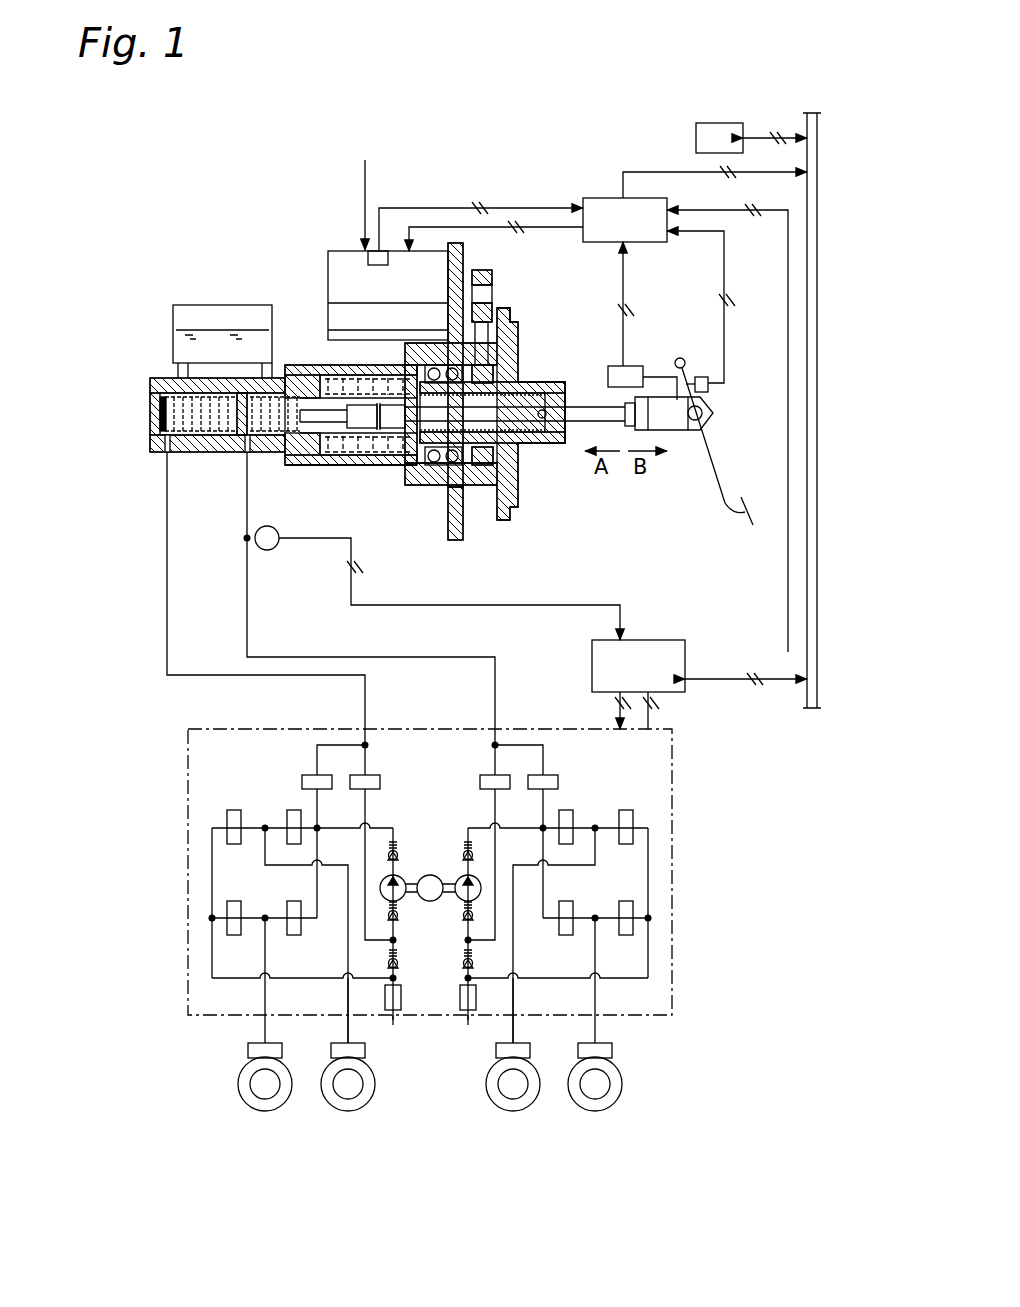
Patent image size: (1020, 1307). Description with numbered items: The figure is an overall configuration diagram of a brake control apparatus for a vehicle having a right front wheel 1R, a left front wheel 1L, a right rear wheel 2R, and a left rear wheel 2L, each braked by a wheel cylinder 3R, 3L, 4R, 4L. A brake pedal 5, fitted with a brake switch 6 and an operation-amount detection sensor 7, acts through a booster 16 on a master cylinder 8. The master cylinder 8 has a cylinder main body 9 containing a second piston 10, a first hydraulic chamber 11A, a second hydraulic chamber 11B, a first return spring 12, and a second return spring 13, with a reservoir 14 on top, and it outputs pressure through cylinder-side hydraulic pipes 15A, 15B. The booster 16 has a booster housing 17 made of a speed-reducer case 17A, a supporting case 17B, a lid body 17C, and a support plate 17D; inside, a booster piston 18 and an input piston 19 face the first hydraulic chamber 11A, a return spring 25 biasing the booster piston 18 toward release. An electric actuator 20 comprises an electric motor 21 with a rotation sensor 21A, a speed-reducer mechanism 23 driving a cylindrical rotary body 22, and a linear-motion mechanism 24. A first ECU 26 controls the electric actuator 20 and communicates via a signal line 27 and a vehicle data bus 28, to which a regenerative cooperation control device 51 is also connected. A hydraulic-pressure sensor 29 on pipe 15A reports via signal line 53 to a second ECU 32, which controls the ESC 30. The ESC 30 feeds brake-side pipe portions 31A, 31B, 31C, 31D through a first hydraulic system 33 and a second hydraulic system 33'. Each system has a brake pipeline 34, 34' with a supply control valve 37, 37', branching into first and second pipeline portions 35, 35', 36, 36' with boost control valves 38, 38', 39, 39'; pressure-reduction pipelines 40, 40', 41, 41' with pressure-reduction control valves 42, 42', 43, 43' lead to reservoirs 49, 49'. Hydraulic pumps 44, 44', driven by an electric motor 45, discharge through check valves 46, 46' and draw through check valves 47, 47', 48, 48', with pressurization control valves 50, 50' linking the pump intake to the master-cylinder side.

The left front wheel 1L is at (530, 1098).
The right front wheel 1R is at (365, 1100).
The left rear wheel 2L is at (238, 1083).
The right rear wheel 2R is at (620, 1100).
The front-wheel side wheel cylinder 3L is at (530, 1047).
The front-wheel side wheel cylinder 3R is at (335, 1044).
The rear-wheel side wheel cylinder 4L is at (248, 1048).
The rear-wheel side wheel cylinder 4R is at (613, 1048).
The brake pedal 5 is at (742, 497).
The brake switch 6 is at (709, 386).
The operation-amount detection sensor 7 is at (634, 365).
The master cylinder 8 is at (293, 362).
The cylinder main body 9 is at (165, 380).
The second piston 10 is at (232, 452).
The first hydraulic chamber 11A is at (262, 452).
The second hydraulic chamber 11B is at (200, 452).
The first return spring 12 is at (300, 425).
The second return spring 13 is at (156, 452).
The reservoir 14 is at (200, 304).
The cylinder-side hydraulic pipe 15A is at (340, 657).
The cylinder-side hydraulic pipe 15B is at (200, 620).
The booster 16 is at (363, 193).
The booster housing 17 is at (516, 512).
The speed-reducer case 17A is at (440, 482).
The supporting case 17B is at (358, 467).
The lid body 17C is at (518, 335).
The support plate 17D is at (452, 528).
The booster piston 18 is at (335, 380).
The input piston 19 is at (392, 430).
The electric actuator 20 is at (497, 278).
The electric motor 21 is at (340, 258).
The rotation sensor 21A is at (383, 255).
The cylindrical rotary body 22 is at (498, 455).
The speed-reducer mechanism 23 is at (500, 348).
The linear-motion mechanism 24 is at (520, 448).
The return spring 25 is at (345, 430).
The first ECU 26 is at (598, 197).
The signal line 27 is at (788, 345).
The vehicle data bus 28 is at (807, 690).
The hydraulic-pressure sensor 29 is at (275, 548).
The ESC 30 is at (675, 950).
The brake-side pipe portion 31A is at (515, 1003).
The brake-side pipe portion 31B is at (346, 1003).
The brake-side pipe portion 31C is at (262, 1003).
The brake-side pipe portion 31D is at (598, 1000).
The second ECU 32 is at (592, 664).
The first hydraulic system 33 is at (497, 734).
The second hydraulic system 33' is at (365, 734).
The brake pipeline 34 is at (558, 795).
The brake pipeline 34' is at (302, 795).
The first pipeline portion 35 is at (576, 935).
The first pipeline portion 35' is at (283, 935).
The second pipeline portion 36 is at (595, 897).
The second pipeline portion 36' is at (264, 900).
The supply control valve 37 is at (566, 827).
The supply control valve 37' is at (307, 827).
The boost control valve 38 is at (585, 818).
The boost control valve 38' is at (277, 818).
The boost control valve 39 is at (559, 939).
The boost control valve 39' is at (301, 939).
The first pressure-reduction pipeline 40 is at (682, 903).
The first pressure-reduction pipeline 40' is at (181, 903).
The second pressure-reduction pipeline 41 is at (681, 904).
The second pressure-reduction pipeline 41' is at (183, 944).
The first pressure-reduction control valve 42 is at (639, 814).
The first pressure-reduction control valve 42' is at (220, 814).
The second pressure-reduction control valve 43 is at (625, 939).
The second pressure-reduction control valve 43' is at (231, 939).
The hydraulic pump 44 is at (492, 924).
The hydraulic pump 44' is at (368, 924).
The electric motor 45 is at (430, 875).
The check valve 46 is at (459, 829).
The check valve 46' is at (401, 829).
The check valve 47 is at (453, 937).
The check valve 47' is at (420, 935).
The check valve 48 is at (485, 977).
The check valve 48' is at (411, 995).
The reservoir for hydraulic-pressure control 49 is at (461, 1033).
The reservoir for hydraulic-pressure control 49' is at (396, 1033).
The pressurization control valve 50 is at (480, 842).
The pressurization control valve 50' is at (386, 842).
The regenerative cooperation control device 51 is at (696, 133).
The signal line 53 is at (470, 605).